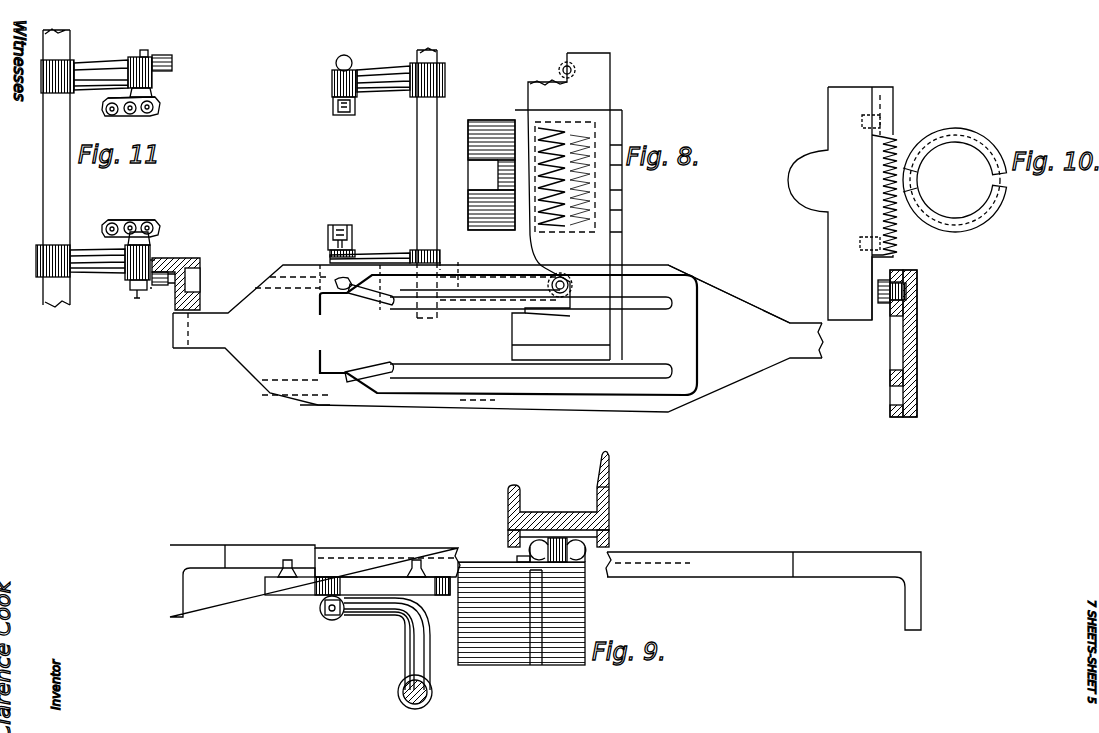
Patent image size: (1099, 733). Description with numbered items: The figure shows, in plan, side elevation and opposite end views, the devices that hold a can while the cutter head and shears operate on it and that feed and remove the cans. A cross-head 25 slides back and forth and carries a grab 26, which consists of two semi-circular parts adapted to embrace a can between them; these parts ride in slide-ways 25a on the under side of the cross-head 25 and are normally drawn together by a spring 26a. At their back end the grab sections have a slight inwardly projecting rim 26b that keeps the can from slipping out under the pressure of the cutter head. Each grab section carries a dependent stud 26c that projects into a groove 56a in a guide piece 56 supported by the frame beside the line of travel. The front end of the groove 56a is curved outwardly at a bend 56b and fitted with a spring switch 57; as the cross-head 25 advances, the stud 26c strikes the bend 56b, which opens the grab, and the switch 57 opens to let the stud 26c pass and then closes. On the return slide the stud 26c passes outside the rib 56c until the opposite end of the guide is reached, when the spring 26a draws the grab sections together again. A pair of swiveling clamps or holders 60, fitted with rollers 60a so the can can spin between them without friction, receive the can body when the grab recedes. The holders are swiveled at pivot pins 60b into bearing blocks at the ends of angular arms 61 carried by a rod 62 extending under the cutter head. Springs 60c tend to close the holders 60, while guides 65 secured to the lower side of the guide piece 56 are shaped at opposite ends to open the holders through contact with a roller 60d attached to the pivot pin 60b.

In FIG. 8, the cross-head 25 is at (622, 245).
In FIG. 9, the cross-head 25 is at (522, 500).
In FIG. 9, the slide-ways 25a is at (608, 540).
In FIG. 8, the grab 26 is at (497, 119).
In FIG. 10, the grab 26 is at (950, 243).
In FIG. 9, the grab 26 is at (587, 612).
In FIG. 8, the spring 26a is at (560, 165).
In FIG. 10, the inwardly projecting rim 26b is at (928, 230).
In FIG. 10, the dependent stud 26c is at (908, 296).
In FIG. 8, the guide piece 56 is at (735, 293).
In FIG. 10, the guide piece 56 is at (917, 374).
In FIG. 9, the guide piece 56 is at (923, 568).
In FIG. 8, the groove 56a is at (668, 283).
In FIG. 8, the outwardly curved end of groove 56b is at (340, 283).
In FIG. 8, the rib 56c is at (508, 335).
In FIG. 8, the spring switch 57 is at (395, 365).
In FIG. 11, the swiveling clamp 60 is at (158, 108).
In FIG. 8, the swiveling clamp 60 is at (332, 100).
In FIG. 11, the roller 60a is at (131, 158).
In FIG. 8, the roller 60a is at (357, 118).
In FIG. 11, the pivot pin 60b is at (137, 300).
In FIG. 11, the spring 60c is at (160, 248).
In FIG. 11, the roller 60d is at (160, 290).
In FIG. 11, the angular arm 61 is at (112, 58).
In FIG. 8, the angular arm 61 is at (383, 93).
In FIG. 9, the angular arm 61 is at (405, 667).
In FIG. 11, the rod 62 is at (45, 164).
In FIG. 8, the rod 62 is at (417, 190).
In FIG. 9, the rod 62 is at (433, 692).
In FIG. 11, the guide 65 is at (180, 258).
In FIG. 8, the guide 65 is at (470, 270).
In FIG. 9, the guide 65 is at (288, 597).